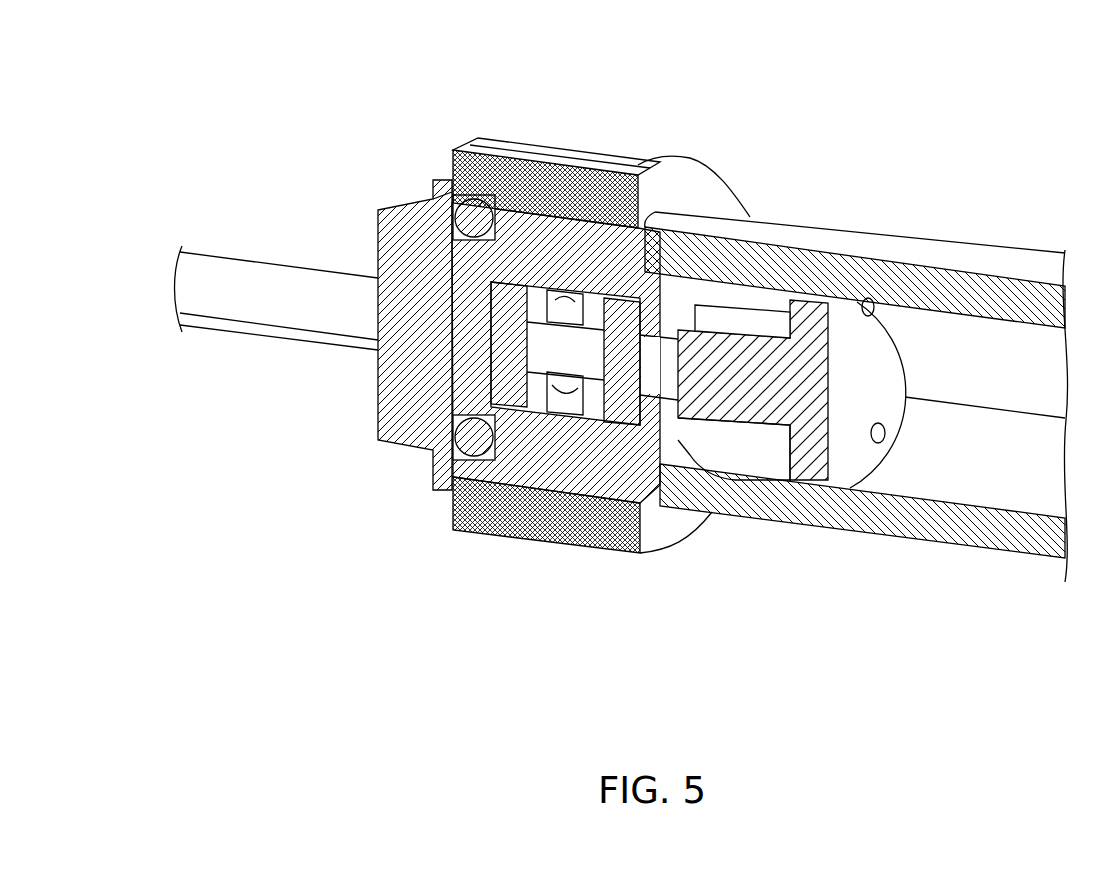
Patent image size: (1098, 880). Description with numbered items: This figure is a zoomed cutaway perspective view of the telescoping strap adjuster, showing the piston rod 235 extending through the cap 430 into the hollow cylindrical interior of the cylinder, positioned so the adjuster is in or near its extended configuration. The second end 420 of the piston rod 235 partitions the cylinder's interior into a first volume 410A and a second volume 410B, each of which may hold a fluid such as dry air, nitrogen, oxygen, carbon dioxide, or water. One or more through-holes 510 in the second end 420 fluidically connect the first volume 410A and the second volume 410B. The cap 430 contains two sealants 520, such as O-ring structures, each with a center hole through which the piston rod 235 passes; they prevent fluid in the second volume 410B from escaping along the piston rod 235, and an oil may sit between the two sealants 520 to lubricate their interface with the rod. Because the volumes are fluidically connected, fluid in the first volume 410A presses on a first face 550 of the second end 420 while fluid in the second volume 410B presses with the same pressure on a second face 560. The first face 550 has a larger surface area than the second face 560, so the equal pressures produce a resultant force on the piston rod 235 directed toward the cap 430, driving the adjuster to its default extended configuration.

The piston rod 235 is at (303, 302).
The first volume 410A is at (978, 355).
The second volume 410B is at (737, 450).
The second end of the piston rod 420 is at (810, 305).
The cap 430 is at (403, 425).
The through-holes 510 is at (880, 428).
The sealants 520 is at (505, 320).
The first face 550 is at (843, 418).
The second face 560 is at (790, 453).